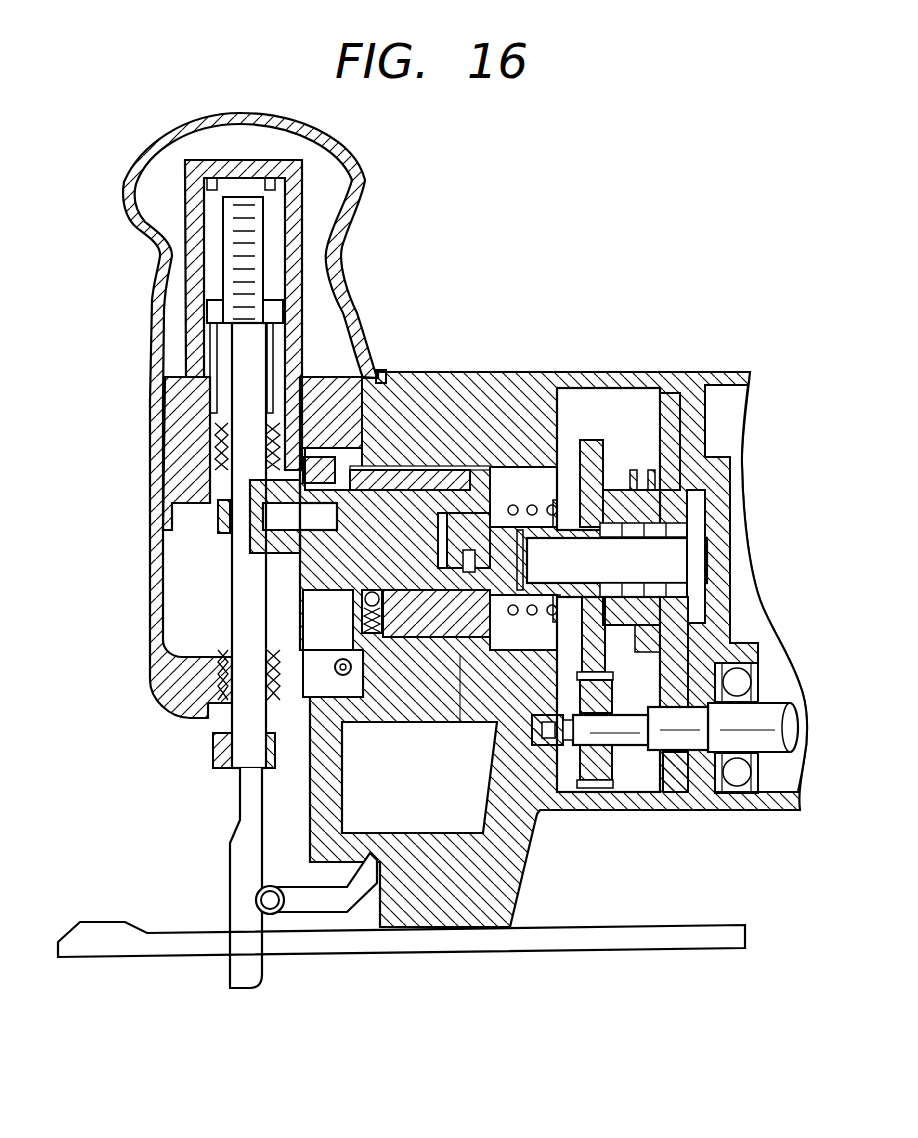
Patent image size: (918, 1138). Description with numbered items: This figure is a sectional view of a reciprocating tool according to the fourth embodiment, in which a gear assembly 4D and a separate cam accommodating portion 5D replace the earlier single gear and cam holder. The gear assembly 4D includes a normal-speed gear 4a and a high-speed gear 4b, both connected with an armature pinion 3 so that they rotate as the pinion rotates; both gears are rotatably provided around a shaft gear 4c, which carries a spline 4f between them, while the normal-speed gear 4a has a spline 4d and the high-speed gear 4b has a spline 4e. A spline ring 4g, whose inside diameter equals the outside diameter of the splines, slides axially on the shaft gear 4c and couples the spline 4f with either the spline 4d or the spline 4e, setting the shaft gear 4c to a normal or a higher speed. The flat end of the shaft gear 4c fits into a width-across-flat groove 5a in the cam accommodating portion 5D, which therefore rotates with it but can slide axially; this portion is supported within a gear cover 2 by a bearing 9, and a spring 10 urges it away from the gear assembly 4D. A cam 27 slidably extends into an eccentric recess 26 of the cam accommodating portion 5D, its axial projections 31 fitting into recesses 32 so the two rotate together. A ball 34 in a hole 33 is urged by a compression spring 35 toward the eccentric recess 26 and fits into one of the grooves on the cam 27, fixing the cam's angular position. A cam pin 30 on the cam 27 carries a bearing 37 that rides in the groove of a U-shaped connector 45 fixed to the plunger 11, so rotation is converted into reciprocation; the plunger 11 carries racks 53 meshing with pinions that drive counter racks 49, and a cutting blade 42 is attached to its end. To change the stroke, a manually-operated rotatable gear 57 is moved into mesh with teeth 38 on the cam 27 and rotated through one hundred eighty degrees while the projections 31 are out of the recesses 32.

The gear cover 2 is at (405, 400).
The armature pinion 3 is at (600, 690).
The normal-speed gear 4a is at (670, 470).
The high-speed gear 4b is at (592, 440).
The shaft gear 4c is at (548, 470).
The gear assembly 4D is at (574, 428).
The spline 4d is at (645, 470).
The spline 4e is at (608, 445).
The spline 4f is at (630, 460).
The spline ring 4g is at (690, 600).
The width-across-flat groove 5a is at (510, 467).
The cam accommodating portion 5D is at (435, 470).
The bearing 9 is at (398, 692).
The spring 10 is at (525, 480).
The plunger 11 is at (236, 568).
The eccentric recess 26 is at (410, 398).
The cam 27 is at (348, 455).
The cam pin 30 is at (270, 517).
The axial projections 31 is at (450, 470).
The recesses 32 is at (480, 470).
The hole 33 is at (462, 655).
The ball 34 is at (345, 607).
The compression spring 35 is at (330, 622).
The bearing 37 is at (232, 490).
The teeth 38 is at (333, 645).
The cutting blade 42 is at (240, 858).
The connector 45 is at (262, 480).
The counter racks 49 is at (210, 345).
The racks 53 is at (240, 245).
The manually-operated rotatable gear 57 is at (337, 675).